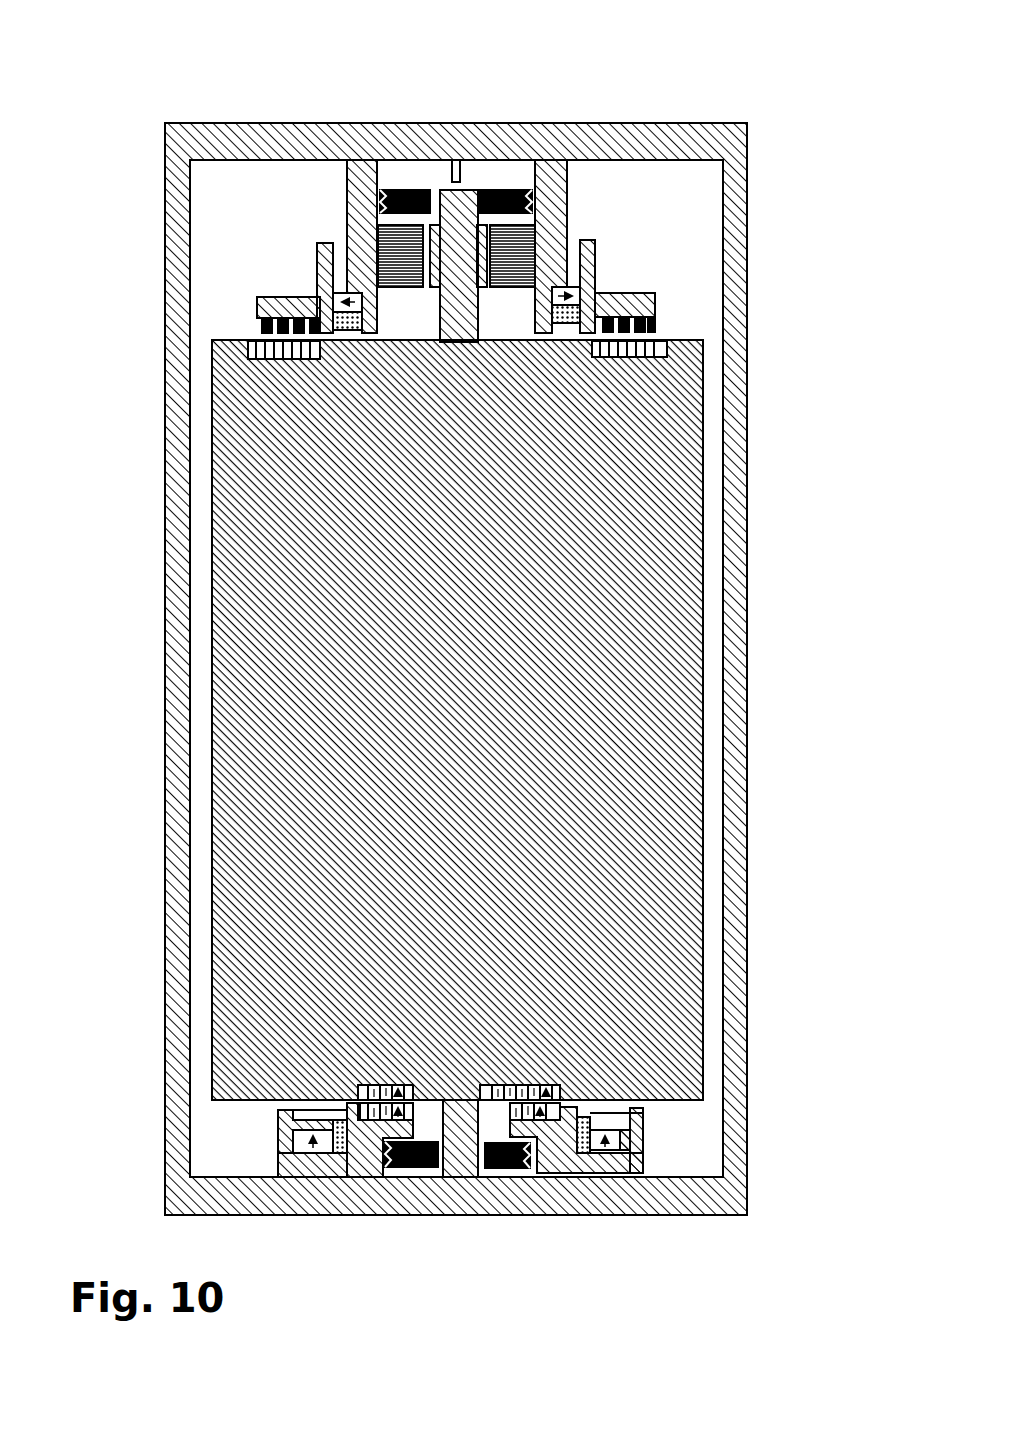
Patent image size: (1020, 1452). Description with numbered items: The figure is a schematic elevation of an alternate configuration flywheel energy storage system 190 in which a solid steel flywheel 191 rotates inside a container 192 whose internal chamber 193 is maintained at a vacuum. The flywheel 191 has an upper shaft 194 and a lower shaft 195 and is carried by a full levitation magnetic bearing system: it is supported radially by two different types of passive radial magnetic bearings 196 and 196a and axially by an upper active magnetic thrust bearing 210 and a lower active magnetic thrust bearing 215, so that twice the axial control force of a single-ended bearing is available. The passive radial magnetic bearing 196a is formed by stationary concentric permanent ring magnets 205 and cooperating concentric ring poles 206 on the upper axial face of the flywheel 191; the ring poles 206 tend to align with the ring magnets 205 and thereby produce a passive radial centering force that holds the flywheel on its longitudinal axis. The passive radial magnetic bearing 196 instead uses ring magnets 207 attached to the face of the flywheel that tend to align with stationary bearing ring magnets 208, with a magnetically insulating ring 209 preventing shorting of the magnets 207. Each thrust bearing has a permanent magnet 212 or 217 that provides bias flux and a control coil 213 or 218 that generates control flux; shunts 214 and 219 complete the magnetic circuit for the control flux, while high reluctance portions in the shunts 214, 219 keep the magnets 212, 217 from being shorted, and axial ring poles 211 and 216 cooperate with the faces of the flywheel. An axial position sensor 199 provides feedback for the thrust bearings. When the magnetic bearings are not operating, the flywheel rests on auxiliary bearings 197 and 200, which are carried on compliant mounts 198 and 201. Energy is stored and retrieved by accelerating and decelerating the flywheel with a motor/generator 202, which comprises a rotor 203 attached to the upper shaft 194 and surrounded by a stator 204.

The flywheel energy storage system 190 is at (155, 42).
The flywheel 191 is at (703, 547).
The container 192 is at (747, 690).
The internal chamber 193 is at (712, 1133).
The upper shaft 194 is at (463, 188).
The lower shaft 195 is at (465, 1175).
The passive radial magnetic bearing 196 is at (423, 1106).
The passive radial magnetic bearing 196a is at (672, 323).
The auxiliary bearing 197 is at (518, 188).
The compliant mount 198 is at (391, 188).
The axial position sensor 199 is at (429, 124).
The auxiliary bearing 200 is at (498, 1170).
The compliant mount 201 is at (525, 1170).
The motor/generator 202 is at (488, 300).
The rotor 203 is at (433, 290).
The stator 204 is at (402, 290).
The stationary concentric permanent ring magnets 205 is at (258, 322).
The concentric ring poles 206 is at (320, 358).
The ring magnets 207 is at (386, 1080).
The stationary bearing ring magnets 208 is at (497, 1084).
The magnetically insulating ring 209 is at (556, 1090).
The upper active magnetic thrust bearing 210 is at (351, 338).
The axial ring pole 211 is at (552, 336).
The permanent magnet 212 is at (588, 288).
The control coil 213 is at (598, 298).
The shunt 214 is at (341, 258).
The lower active magnetic thrust bearing 215 is at (604, 1096).
The axial ring pole 216 is at (287, 1104).
The permanent magnet 217 is at (335, 1153).
The control coil 218 is at (346, 1140).
The shunt 219 is at (290, 1132).